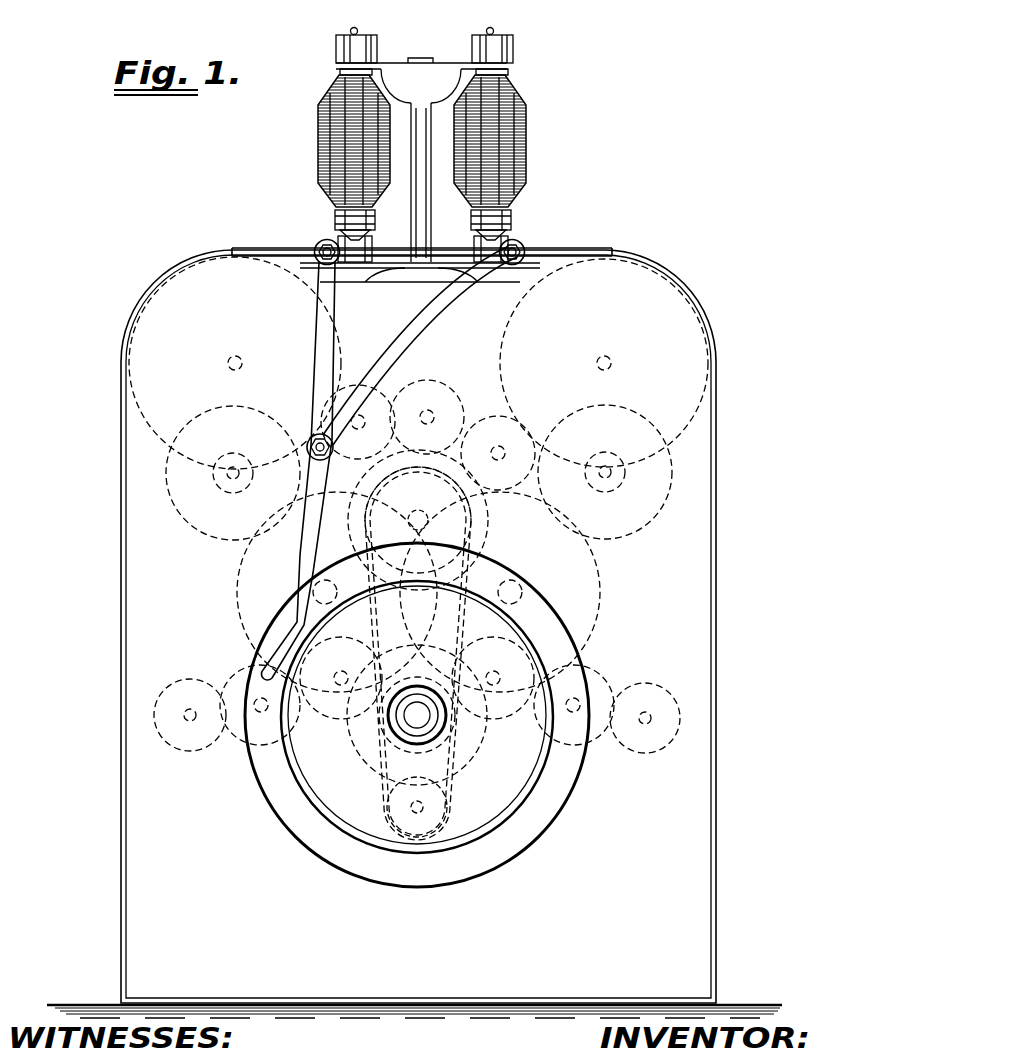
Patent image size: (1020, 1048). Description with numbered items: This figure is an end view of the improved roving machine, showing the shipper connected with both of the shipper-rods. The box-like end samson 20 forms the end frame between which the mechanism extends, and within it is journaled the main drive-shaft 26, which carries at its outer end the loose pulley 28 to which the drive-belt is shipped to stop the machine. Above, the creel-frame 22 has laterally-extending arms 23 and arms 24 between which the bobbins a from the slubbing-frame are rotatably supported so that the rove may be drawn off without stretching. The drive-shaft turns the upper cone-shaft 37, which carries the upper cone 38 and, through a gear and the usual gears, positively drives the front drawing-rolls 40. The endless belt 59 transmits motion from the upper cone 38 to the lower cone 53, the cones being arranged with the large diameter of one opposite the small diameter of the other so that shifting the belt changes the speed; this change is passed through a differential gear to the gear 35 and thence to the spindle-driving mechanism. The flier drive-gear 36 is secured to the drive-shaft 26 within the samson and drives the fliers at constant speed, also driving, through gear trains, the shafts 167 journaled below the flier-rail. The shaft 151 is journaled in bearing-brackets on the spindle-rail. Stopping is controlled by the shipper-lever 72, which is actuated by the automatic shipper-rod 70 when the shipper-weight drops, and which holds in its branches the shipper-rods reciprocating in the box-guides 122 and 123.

The end samson 20 is at (712, 773).
The creel-frame 22 is at (411, 215).
The laterally-extending arms 23 is at (381, 65).
The bobbins a is at (318, 143).
The laterally-extending arms 24 is at (378, 265).
The box-guide 122 is at (316, 246).
The box-guide 123 is at (521, 247).
The automatic shipper-rod 70 is at (331, 462).
The shipper-lever 72 is at (314, 482).
The front drawing-rolls 40 is at (235, 357).
The shafts 167 is at (233, 478).
The upper cone-shaft 37 is at (420, 516).
The upper cone 38 is at (375, 535).
The endless belt 59 is at (372, 600).
The lower cone 53 is at (417, 807).
The loose pulley 28 is at (498, 822).
The main drive-shaft 26 is at (417, 715).
The gear 35 is at (436, 650).
The flier drive-gear 36 is at (478, 748).
The shaft 151 is at (191, 712).